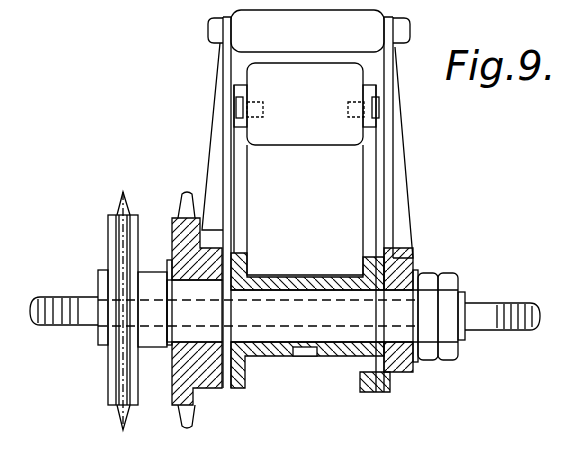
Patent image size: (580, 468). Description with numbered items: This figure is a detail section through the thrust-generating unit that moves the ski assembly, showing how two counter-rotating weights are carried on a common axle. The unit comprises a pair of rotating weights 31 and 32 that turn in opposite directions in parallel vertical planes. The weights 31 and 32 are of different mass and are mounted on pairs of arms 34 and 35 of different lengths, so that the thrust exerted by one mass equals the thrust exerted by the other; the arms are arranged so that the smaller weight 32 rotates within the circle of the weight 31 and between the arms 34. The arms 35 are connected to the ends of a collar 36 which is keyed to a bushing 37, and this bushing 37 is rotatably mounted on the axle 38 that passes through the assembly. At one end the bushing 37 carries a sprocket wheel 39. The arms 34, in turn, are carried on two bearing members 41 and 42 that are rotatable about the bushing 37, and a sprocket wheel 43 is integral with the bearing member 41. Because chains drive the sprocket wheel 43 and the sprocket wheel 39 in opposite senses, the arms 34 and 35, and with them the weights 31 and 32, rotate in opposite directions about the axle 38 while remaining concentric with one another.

The rotating weight 31 is at (360, 30).
The rotating weight 32 is at (270, 148).
The arms 34 is at (398, 145).
The arms 35 is at (370, 193).
The collar 36 is at (260, 347).
The bushing 37 is at (268, 293).
The axle 38 is at (40, 303).
The sprocket wheel 39 is at (120, 207).
The bearing member 41 is at (205, 367).
The bearing member 42 is at (410, 258).
The sprocket wheel 43 is at (172, 397).